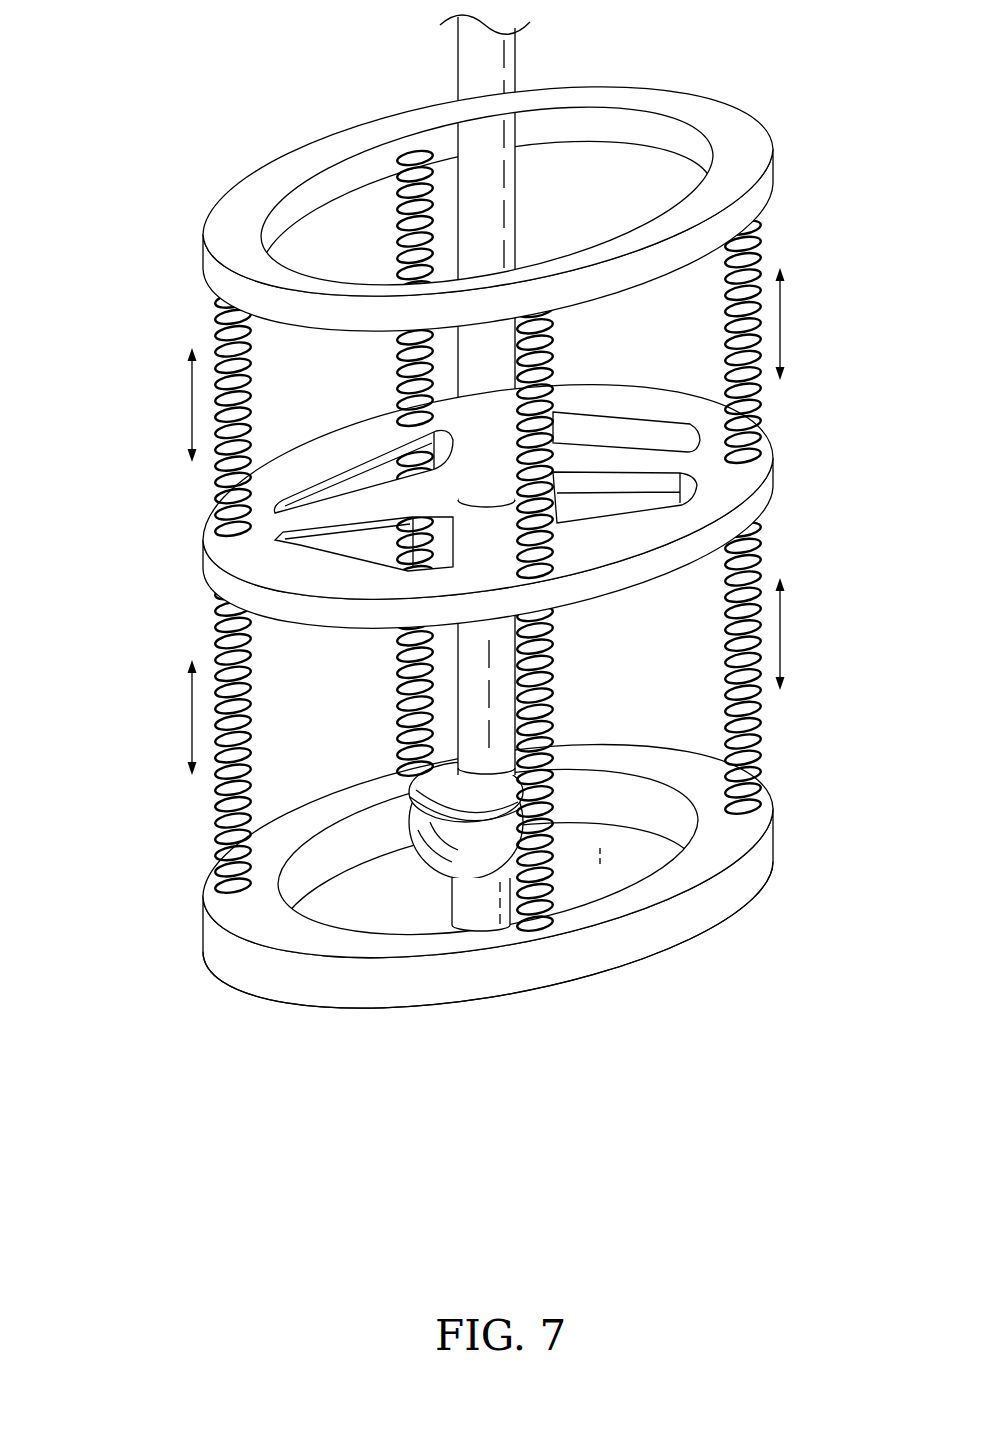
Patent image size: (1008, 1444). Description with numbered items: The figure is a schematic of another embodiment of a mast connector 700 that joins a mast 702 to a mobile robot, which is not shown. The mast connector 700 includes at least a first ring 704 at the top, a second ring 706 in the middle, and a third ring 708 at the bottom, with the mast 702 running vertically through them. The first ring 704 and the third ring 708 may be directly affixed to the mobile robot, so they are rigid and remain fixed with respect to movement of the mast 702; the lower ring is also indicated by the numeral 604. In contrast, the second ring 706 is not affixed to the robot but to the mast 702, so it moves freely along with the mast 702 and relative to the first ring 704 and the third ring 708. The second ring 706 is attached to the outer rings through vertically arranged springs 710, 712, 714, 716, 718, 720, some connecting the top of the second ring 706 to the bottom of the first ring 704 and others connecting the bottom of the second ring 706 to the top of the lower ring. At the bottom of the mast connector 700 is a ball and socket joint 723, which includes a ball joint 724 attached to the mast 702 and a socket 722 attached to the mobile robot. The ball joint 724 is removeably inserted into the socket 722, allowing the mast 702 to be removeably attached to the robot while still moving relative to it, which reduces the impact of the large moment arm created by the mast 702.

The mast connector 700 is at (158, 38).
The mast 702 is at (505, 72).
The first ring 704 is at (730, 140).
The second ring 706 is at (768, 486).
The third ring 708 is at (760, 836).
The spring 710 is at (203, 325).
The spring 712 is at (550, 547).
The spring 714 is at (771, 245).
The spring 716 is at (203, 816).
The spring 718 is at (566, 691).
The spring 720 is at (770, 732).
The socket 722 is at (425, 863).
The ball and socket joint 723 is at (590, 855).
The ball joint 724 is at (423, 793).
The base ring 604 is at (294, 1025).